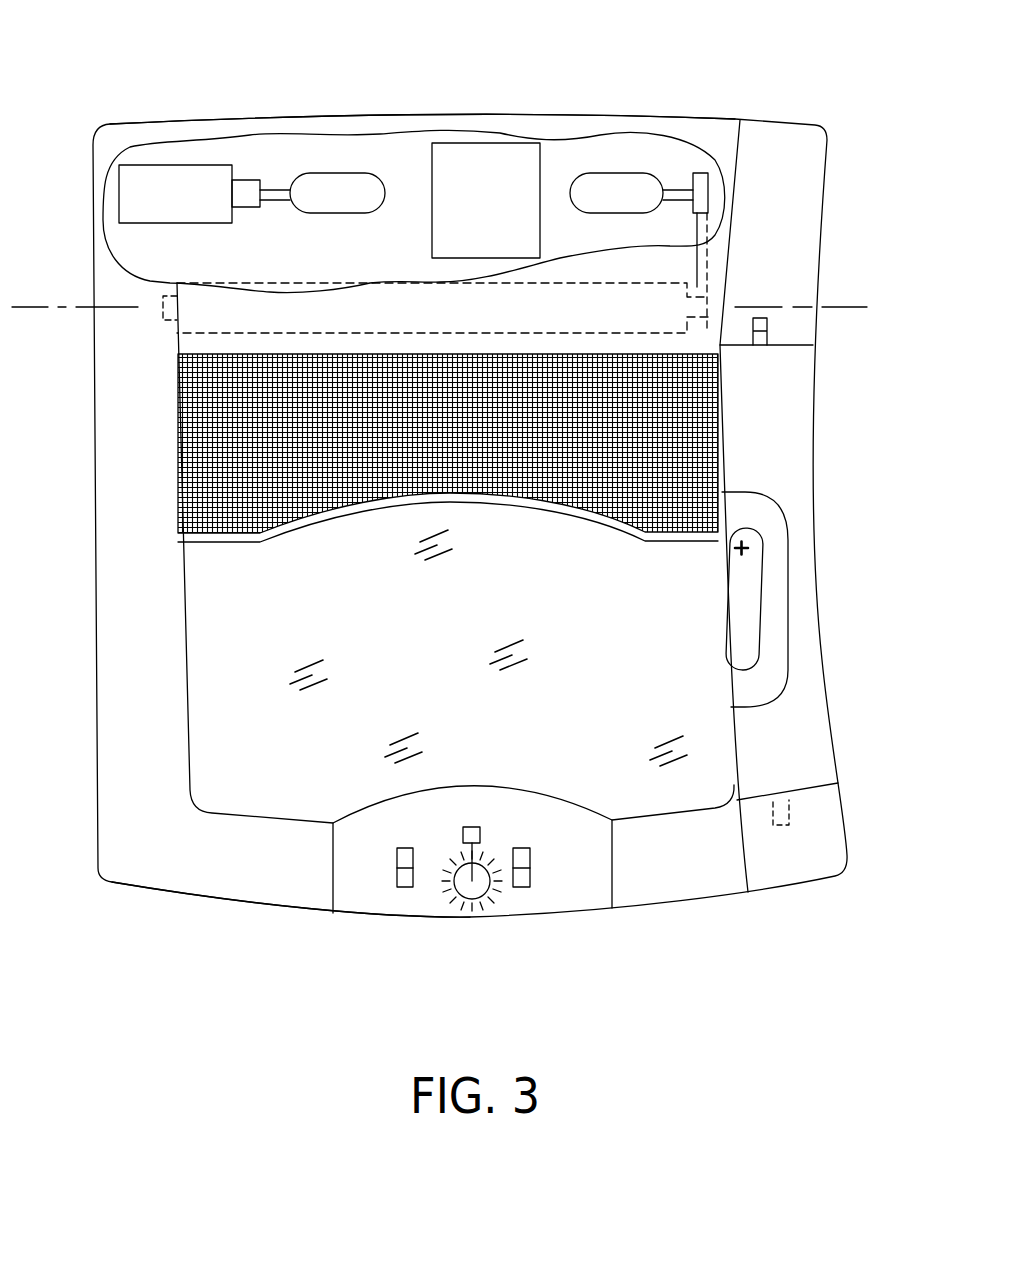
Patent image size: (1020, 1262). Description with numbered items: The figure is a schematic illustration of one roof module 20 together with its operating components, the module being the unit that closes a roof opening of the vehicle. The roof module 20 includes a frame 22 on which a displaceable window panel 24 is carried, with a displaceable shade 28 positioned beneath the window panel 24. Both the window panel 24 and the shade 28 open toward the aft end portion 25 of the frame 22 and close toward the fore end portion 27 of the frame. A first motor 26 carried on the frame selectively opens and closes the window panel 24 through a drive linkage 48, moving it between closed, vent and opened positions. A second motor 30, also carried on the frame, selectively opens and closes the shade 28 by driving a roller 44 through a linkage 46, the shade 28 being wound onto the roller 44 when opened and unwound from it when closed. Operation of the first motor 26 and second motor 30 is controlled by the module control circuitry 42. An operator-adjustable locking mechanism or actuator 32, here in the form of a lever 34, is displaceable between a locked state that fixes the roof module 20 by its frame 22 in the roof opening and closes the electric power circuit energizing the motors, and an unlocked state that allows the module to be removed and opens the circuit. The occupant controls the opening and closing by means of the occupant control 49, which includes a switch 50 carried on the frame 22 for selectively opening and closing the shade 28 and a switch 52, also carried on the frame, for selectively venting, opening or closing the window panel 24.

The roof module 20 is at (770, 80).
The frame 22 is at (797, 282).
The window panel 24 is at (215, 662).
The aft end portion 25 is at (245, 118).
The first motor 26 is at (330, 168).
The fore end portion 27 is at (296, 912).
The shade 28 is at (215, 448).
The second motor 30 is at (617, 172).
The operator-adjustable locking mechanism or actuator 32 is at (788, 523).
The lever 34 is at (748, 601).
The module control circuitry 42 is at (470, 143).
The roller 44 is at (703, 265).
The linkage 46 is at (703, 228).
The drive linkage 48 is at (155, 165).
The occupant control 49 is at (519, 928).
The switch 50 is at (530, 875).
The switch 52 is at (397, 875).